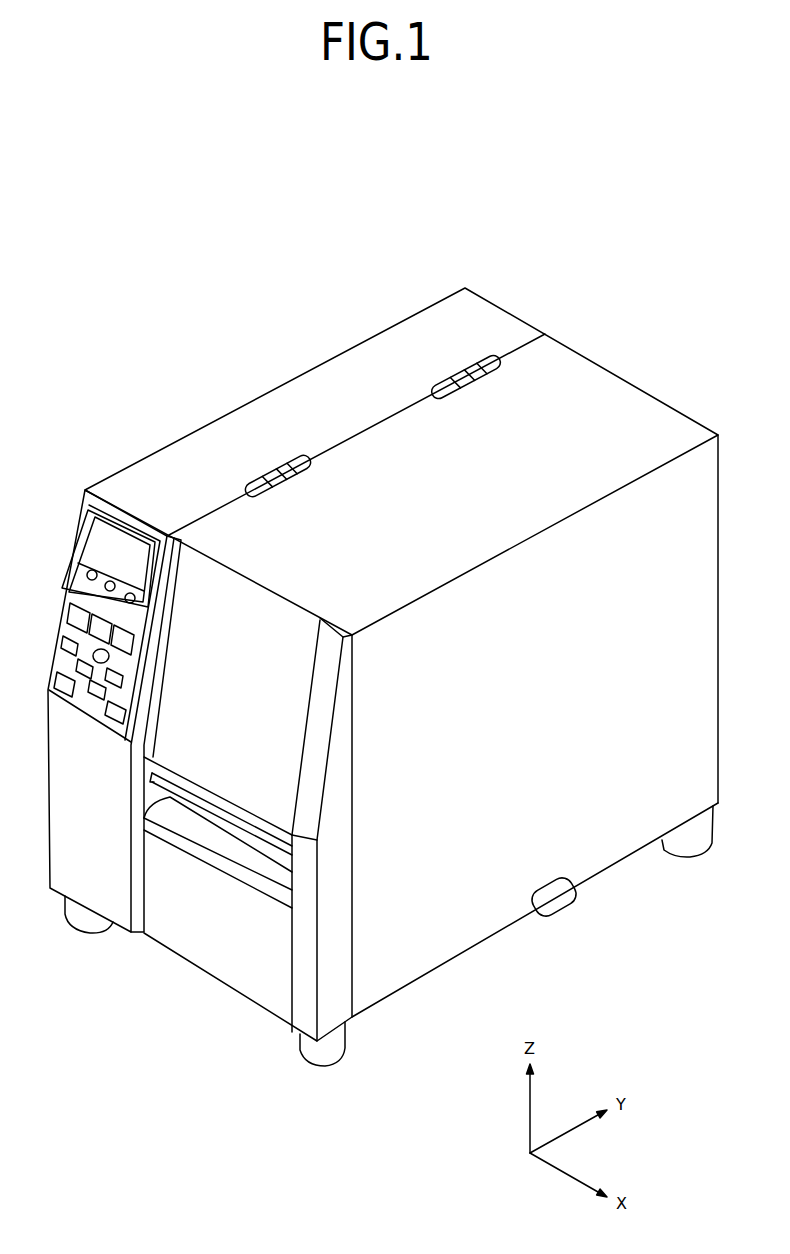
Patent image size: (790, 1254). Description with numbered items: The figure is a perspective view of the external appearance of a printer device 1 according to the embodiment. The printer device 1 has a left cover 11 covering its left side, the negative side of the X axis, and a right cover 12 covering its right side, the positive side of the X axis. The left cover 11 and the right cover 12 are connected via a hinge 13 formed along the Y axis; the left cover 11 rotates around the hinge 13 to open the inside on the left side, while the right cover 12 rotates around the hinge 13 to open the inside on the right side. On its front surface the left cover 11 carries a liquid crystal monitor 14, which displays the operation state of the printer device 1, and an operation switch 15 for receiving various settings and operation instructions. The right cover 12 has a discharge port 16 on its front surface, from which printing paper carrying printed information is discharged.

The printer device 1 is at (147, 333).
The left cover 11 is at (181, 458).
The right cover 12 is at (620, 397).
The hinge 13 is at (280, 462).
The liquid crystal monitor 14 is at (99, 542).
The operation switch 15 is at (74, 661).
The discharge port 16 is at (202, 818).